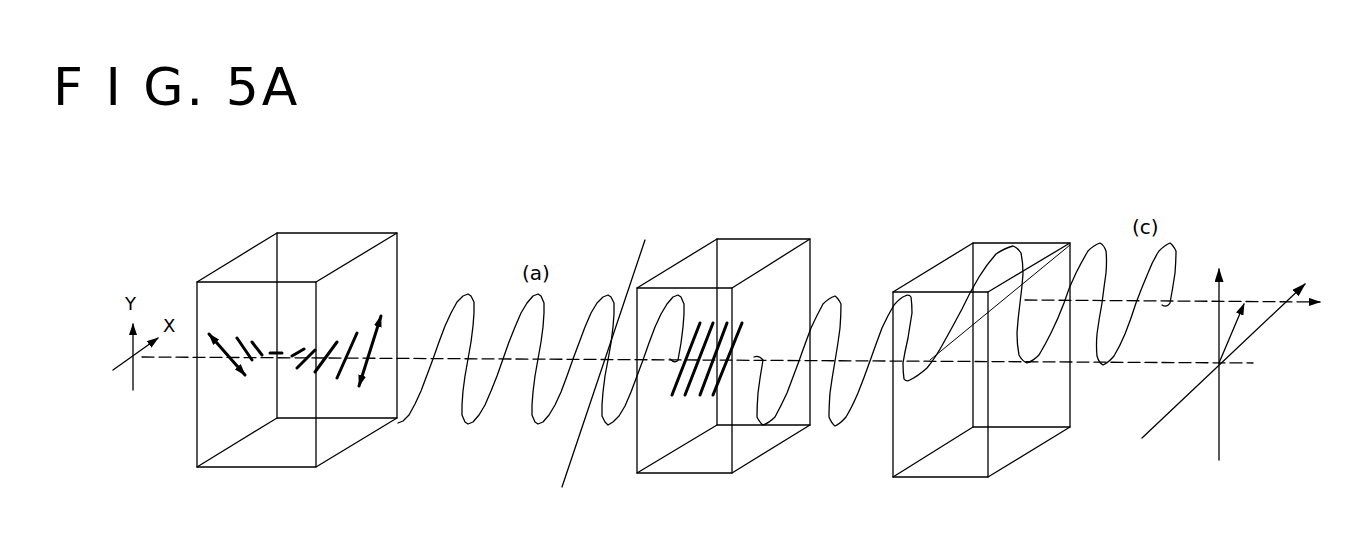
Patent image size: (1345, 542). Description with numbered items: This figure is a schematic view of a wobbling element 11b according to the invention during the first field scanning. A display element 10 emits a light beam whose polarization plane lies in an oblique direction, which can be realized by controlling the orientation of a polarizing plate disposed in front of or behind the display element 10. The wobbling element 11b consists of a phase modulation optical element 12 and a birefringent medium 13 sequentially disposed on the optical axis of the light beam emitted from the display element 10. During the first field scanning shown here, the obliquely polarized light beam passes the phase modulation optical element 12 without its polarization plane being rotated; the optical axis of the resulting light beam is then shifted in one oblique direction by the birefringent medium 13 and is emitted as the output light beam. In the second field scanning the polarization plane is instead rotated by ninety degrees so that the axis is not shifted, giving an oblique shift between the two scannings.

The display element 10 is at (239, 236).
The wobbling element 11b is at (906, 291).
The phase modulation optical element 12 is at (680, 245).
The birefringent medium 13 is at (981, 324).